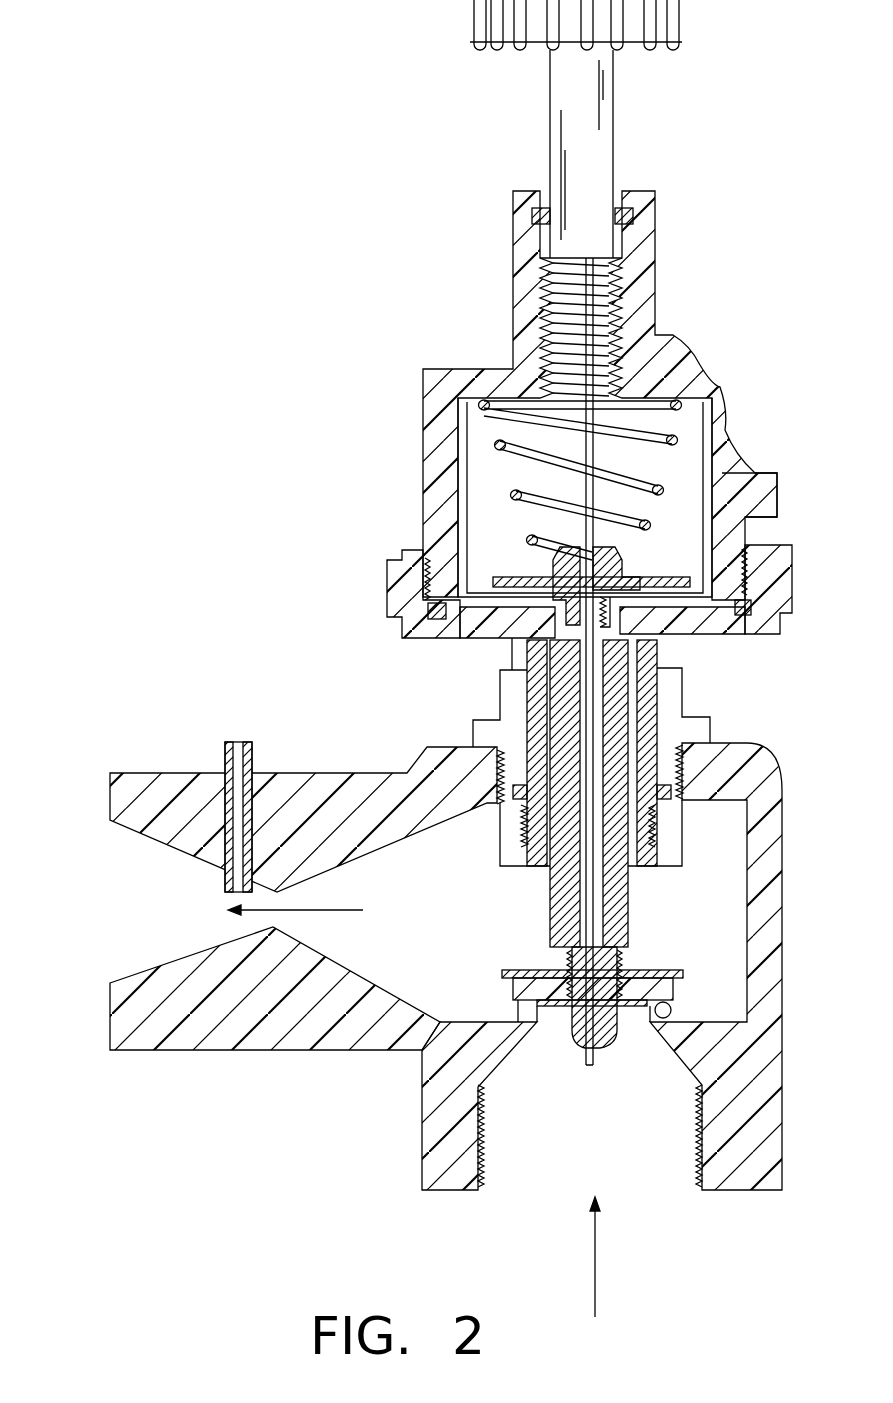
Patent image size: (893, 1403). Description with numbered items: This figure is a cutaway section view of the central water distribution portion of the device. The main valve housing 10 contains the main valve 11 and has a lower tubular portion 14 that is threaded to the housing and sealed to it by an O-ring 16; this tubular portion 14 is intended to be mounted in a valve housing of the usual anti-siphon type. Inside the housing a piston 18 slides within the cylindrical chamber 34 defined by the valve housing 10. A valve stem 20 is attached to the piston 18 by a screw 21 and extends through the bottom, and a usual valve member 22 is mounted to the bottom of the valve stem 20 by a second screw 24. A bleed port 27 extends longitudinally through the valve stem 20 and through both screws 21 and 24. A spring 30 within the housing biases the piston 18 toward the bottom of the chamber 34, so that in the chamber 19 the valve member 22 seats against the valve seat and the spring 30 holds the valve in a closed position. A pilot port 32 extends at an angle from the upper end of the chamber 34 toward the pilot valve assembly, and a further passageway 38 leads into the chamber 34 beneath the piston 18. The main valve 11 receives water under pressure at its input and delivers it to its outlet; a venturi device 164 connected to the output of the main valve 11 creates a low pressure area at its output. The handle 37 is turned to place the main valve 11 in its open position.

The main valve housing 10 is at (355, 477).
The main valve 11 is at (650, 962).
The lower tubular portion 14 is at (670, 737).
The O-ring 16 is at (405, 641).
The piston 18 is at (470, 647).
The chamber 19 is at (630, 689).
The valve stem 20 is at (553, 908).
The screw 21 is at (630, 546).
The valve member 22 is at (680, 1015).
The screw 24 is at (607, 1047).
The bleed port 27 is at (618, 898).
The spring 30 is at (640, 482).
The pilot port 32 is at (721, 386).
The cylindrical chamber 34 is at (504, 492).
The handle 37 is at (502, 48).
The passageway 38 is at (770, 465).
The venturi device 164 is at (275, 988).